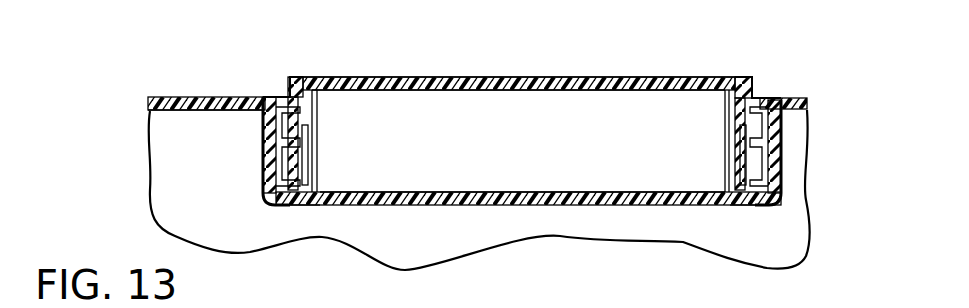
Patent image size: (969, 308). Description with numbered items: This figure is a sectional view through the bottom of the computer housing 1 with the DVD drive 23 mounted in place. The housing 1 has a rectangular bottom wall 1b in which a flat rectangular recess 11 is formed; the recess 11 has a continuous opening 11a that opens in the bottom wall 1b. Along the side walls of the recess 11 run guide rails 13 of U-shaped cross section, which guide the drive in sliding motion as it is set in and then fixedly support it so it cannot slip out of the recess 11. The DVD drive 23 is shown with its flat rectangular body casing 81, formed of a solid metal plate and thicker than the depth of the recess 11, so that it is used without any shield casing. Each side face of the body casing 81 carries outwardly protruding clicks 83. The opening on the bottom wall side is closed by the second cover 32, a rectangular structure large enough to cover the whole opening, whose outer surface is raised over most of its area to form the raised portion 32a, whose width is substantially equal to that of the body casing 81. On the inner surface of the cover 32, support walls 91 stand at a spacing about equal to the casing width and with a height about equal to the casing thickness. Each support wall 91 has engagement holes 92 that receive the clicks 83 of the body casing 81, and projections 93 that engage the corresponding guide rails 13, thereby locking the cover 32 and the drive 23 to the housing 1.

The housing 1 is at (198, 162).
The bottom wall 1b is at (200, 97).
The recess 11 is at (410, 207).
The opening 11a is at (272, 108).
The guide rail 13 is at (272, 207).
The DVD drive 23 is at (640, 74).
The second cover 32 is at (447, 72).
The raised portion 32a is at (527, 77).
The body casing 81 is at (528, 168).
The click 83 is at (284, 123).
The support wall 91 is at (284, 112).
The engagement hole 92 is at (313, 207).
The projection 93 is at (279, 150).